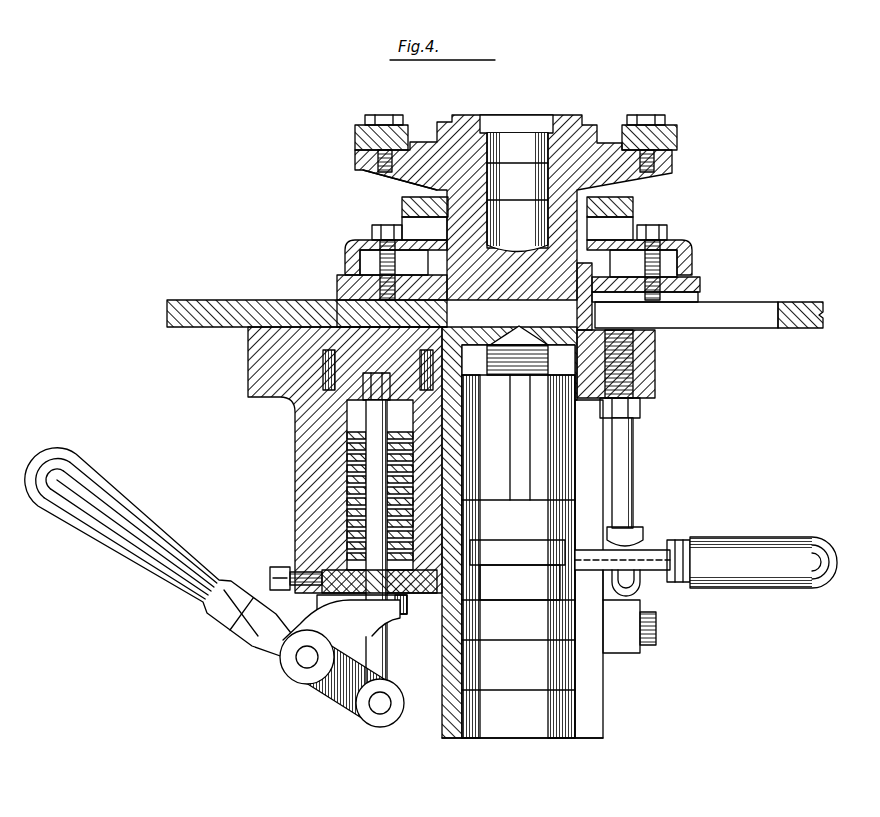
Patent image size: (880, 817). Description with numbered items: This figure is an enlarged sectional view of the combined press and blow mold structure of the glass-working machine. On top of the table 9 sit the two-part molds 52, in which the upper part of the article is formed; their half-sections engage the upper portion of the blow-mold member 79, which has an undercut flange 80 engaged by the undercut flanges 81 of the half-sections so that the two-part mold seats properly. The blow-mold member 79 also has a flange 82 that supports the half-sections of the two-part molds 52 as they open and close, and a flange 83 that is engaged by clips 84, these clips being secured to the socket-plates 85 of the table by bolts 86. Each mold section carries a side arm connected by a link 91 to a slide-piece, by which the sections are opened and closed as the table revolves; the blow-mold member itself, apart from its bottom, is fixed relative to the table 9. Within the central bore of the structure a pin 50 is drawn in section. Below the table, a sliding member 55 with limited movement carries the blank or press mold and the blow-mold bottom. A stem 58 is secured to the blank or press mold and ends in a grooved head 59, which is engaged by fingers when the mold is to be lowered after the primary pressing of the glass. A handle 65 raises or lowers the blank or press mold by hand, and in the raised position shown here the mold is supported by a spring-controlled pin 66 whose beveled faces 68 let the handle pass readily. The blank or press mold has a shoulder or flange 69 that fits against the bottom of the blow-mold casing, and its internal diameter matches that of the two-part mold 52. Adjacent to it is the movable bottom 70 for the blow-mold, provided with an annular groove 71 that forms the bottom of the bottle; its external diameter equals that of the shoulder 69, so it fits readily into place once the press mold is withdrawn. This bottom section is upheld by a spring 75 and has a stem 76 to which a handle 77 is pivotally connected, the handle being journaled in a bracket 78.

The table 9 is at (495, 303).
The pin 50 is at (517, 192).
The two-part mold structure 52 is at (516, 112).
The sliding member 55 is at (248, 370).
The stem 58 is at (518, 541).
The grooved head 59 is at (518, 570).
The handle 65 is at (706, 551).
The pin 66 is at (636, 580).
The beveled faces 68 is at (624, 590).
The shoulder or flange 69 is at (592, 290).
The movable bottom 70 is at (326, 325).
The annular groove 71 is at (345, 325).
The spring 75 is at (348, 455).
The stem 76 is at (366, 425).
The handle 77 is at (161, 553).
The bracket 78 is at (342, 663).
The blow-mold member 79 is at (448, 229).
The undercut flange 80 is at (600, 186).
The undercut flange 81 is at (432, 189).
The flange 82 is at (402, 206).
The flange 83 is at (518, 263).
The clip 84 is at (345, 246).
The socket-plate 85 is at (704, 287).
The bolt 86 is at (375, 226).
The link 91 is at (357, 138).